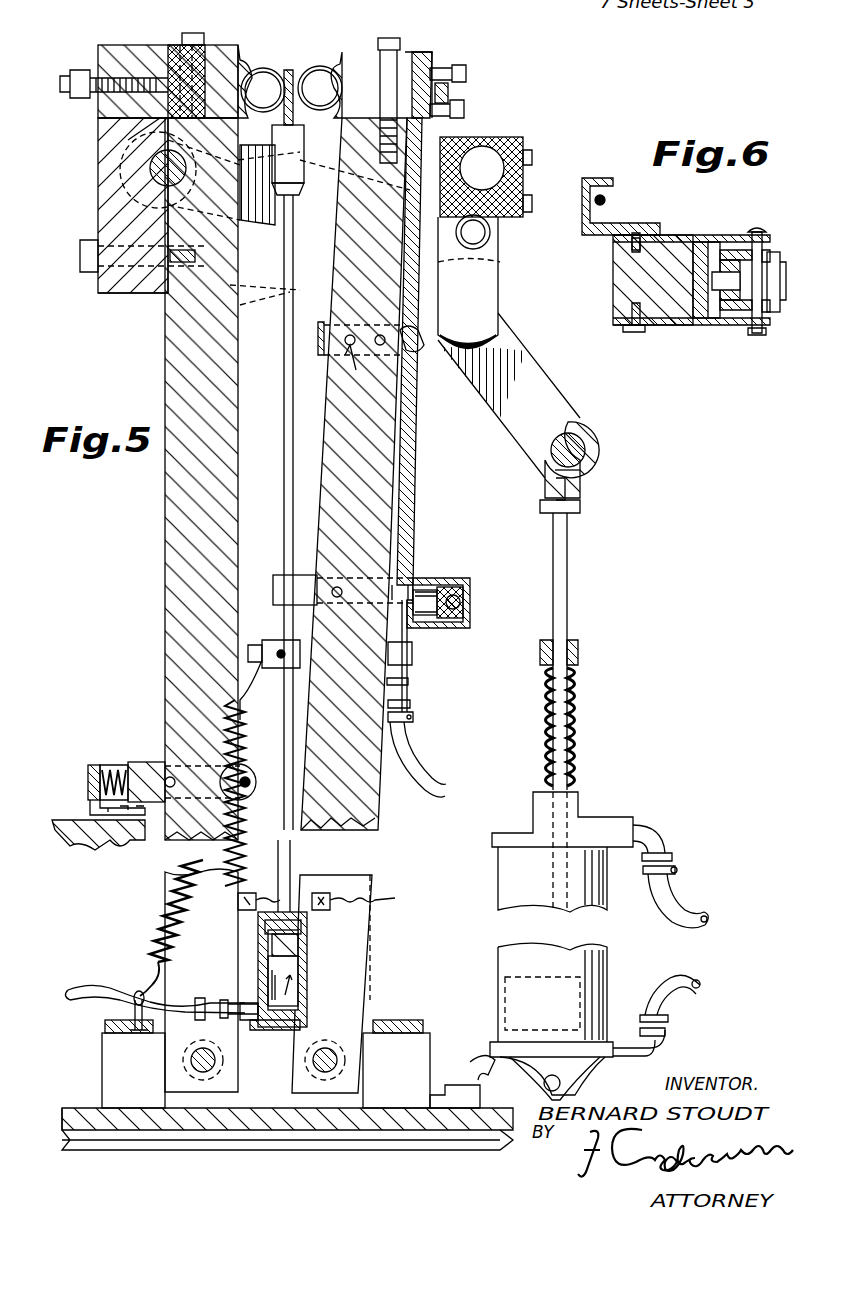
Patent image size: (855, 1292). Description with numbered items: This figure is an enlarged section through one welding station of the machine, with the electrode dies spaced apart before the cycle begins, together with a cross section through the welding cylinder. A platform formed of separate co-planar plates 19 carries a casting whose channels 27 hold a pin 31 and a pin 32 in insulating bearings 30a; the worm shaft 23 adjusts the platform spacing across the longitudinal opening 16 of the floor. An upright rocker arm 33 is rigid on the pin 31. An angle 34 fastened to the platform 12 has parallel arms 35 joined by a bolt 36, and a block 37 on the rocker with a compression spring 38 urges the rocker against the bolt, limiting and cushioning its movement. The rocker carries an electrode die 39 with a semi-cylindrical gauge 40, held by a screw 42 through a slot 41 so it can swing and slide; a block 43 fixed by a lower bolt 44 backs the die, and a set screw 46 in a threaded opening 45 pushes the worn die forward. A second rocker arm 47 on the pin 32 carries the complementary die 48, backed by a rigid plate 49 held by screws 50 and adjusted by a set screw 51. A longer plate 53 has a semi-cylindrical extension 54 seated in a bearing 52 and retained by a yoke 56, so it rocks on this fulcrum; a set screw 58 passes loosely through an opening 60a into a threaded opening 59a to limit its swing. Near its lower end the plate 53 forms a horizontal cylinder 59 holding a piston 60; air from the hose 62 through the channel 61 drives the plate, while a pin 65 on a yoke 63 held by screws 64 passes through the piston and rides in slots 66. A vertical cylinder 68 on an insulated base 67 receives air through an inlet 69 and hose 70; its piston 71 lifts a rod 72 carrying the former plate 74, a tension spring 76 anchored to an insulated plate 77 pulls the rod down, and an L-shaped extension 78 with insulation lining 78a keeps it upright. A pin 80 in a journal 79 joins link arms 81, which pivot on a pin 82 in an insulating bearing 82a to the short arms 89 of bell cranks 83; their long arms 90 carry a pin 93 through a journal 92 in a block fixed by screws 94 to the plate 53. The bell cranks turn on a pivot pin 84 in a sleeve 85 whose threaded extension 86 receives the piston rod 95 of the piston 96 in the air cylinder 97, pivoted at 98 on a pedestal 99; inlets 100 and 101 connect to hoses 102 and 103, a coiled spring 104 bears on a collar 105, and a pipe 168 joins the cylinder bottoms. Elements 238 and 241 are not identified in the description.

In FIG. 5, the platform 12 is at (72, 820).
In FIG. 5, the longitudinal opening 16 is at (390, 952).
In FIG. 5, the plates 19 is at (470, 1150).
In FIG. 5, the worm shaft 23 is at (270, 750).
In FIG. 5, the channel 27 is at (428, 1062).
In FIG. 5, the bearing 30a is at (200, 1088).
In FIG. 5, the pin 31 is at (190, 1062).
In FIG. 5, the pin 32 is at (340, 1058).
In FIG. 5, the rocker arm 33 is at (165, 642).
In FIG. 5, the angle 34 is at (90, 798).
In FIG. 5, the parallel arms 35 is at (106, 765).
In FIG. 5, the bolt 36 is at (248, 800).
In FIG. 5, the block 37 is at (146, 762).
In FIG. 5, the compression spring 38 is at (120, 764).
In FIG. 5, the electrode die 39 is at (286, 48).
In FIG. 5, the semi-cylindrical gauge 40 is at (330, 125).
In FIG. 5, the slot 41 is at (178, 45).
In FIG. 5, the screw 42 is at (204, 38).
In FIG. 5, the block 43 is at (98, 182).
In FIG. 5, the lower bolt 44 is at (80, 262).
In FIG. 5, the threaded opening 45 is at (139, 129).
In FIG. 5, the set screw 46 is at (70, 90).
In FIG. 5, the second rocker arm 47 is at (390, 480).
In FIG. 6, the second rocker arm 47 is at (660, 242).
In FIG. 5, the complementary die 48 is at (386, 38).
In FIG. 5, the rigid plate 49 is at (432, 56).
In FIG. 5, the screws 50 is at (320, 228).
In FIG. 5, the set screw 51 is at (466, 72).
In FIG. 5, the semi-cylindrical bearing 52 is at (420, 350).
In FIG. 5, the plate 53 is at (405, 498).
In FIG. 6, the plate 53 is at (720, 242).
In FIG. 5, the semi-cylindrical extension 54 is at (392, 396).
In FIG. 5, the yoke 56 is at (322, 355).
In FIG. 5, the set screw 58 is at (464, 110).
In FIG. 5, the cylinder 59 is at (445, 578).
In FIG. 6, the cylinder 59 is at (735, 318).
In FIG. 5, the threaded opening 59a is at (448, 126).
In FIG. 5, the piston 60 is at (452, 628).
In FIG. 6, the piston 60 is at (780, 290).
In FIG. 5, the opening 60a is at (448, 90).
In FIG. 5, the air inlet channel 61 is at (408, 634).
In FIG. 6, the air inlet channel 61 is at (730, 326).
In FIG. 5, the air hose 62 is at (420, 776).
In FIG. 6, the yoke 63 is at (665, 330).
In FIG. 6, the screws 64 is at (634, 332).
In FIG. 6, the pin 65 is at (762, 230).
In FIG. 5, the slots 66 is at (470, 598).
In FIG. 6, the slots 66 is at (770, 252).
In FIG. 5, the insulated base 67 is at (268, 1027).
In FIG. 5, the vertical cylinder 68 is at (258, 966).
In FIG. 5, the air inlet 69 is at (250, 1030).
In FIG. 5, the air hose 70 is at (95, 996).
In FIG. 5, the piston 71 is at (298, 950).
In FIG. 5, the rod 72 is at (290, 868).
In FIG. 6, the rod 72 is at (606, 200).
In FIG. 5, the former plate 74 is at (287, 70).
In FIG. 5, the tension spring 76 is at (175, 928).
In FIG. 5, the insulated plate 77 is at (102, 1040).
In FIG. 5, the L-shaped extension 78 is at (300, 575).
In FIG. 6, the L-shaped extension 78 is at (585, 238).
In FIG. 6, the insulation lining 78a is at (614, 190).
In FIG. 5, the journal 79 is at (162, 190).
In FIG. 5, the pin 80 is at (186, 172).
In FIG. 5, the link arms 81 is at (262, 225).
In FIG. 5, the pin 82 is at (500, 250).
In FIG. 5, the bearing 82a is at (490, 232).
In FIG. 5, the bell cranks 83 is at (526, 335).
In FIG. 5, the pivot pin 84 is at (582, 440).
In FIG. 5, the sleeve 85 is at (566, 424).
In FIG. 5, the threaded extension 86 is at (582, 496).
In FIG. 5, the short arm 89 is at (498, 294).
In FIG. 5, the long arm 90 is at (490, 137).
In FIG. 5, the journal 92 is at (532, 166).
In FIG. 5, the pin 93 is at (523, 180).
In FIG. 5, the screws 94 is at (532, 206).
In FIG. 5, the piston rod 95 is at (568, 598).
In FIG. 5, the piston 96 is at (612, 958).
In FIG. 5, the air cylinder 97 is at (498, 878).
In FIG. 5, the pivot mounting 98 is at (551, 1071).
In FIG. 5, the pedestal 99 is at (490, 1140).
In FIG. 5, the air inlet 100 is at (615, 816).
In FIG. 5, the second air inlet 101 is at (630, 1068).
In FIG. 5, the air hose 102 is at (680, 912).
In FIG. 5, the air hose 103 is at (678, 1000).
In FIG. 5, the coiled spring 104 is at (580, 740).
In FIG. 5, the collar 105 is at (580, 656).
In FIG. 5, the pipe 168 is at (480, 1062).
In FIG. 5, the roller shaft 238 is at (268, 58).
In FIG. 5, the roller shaft 241 is at (308, 62).